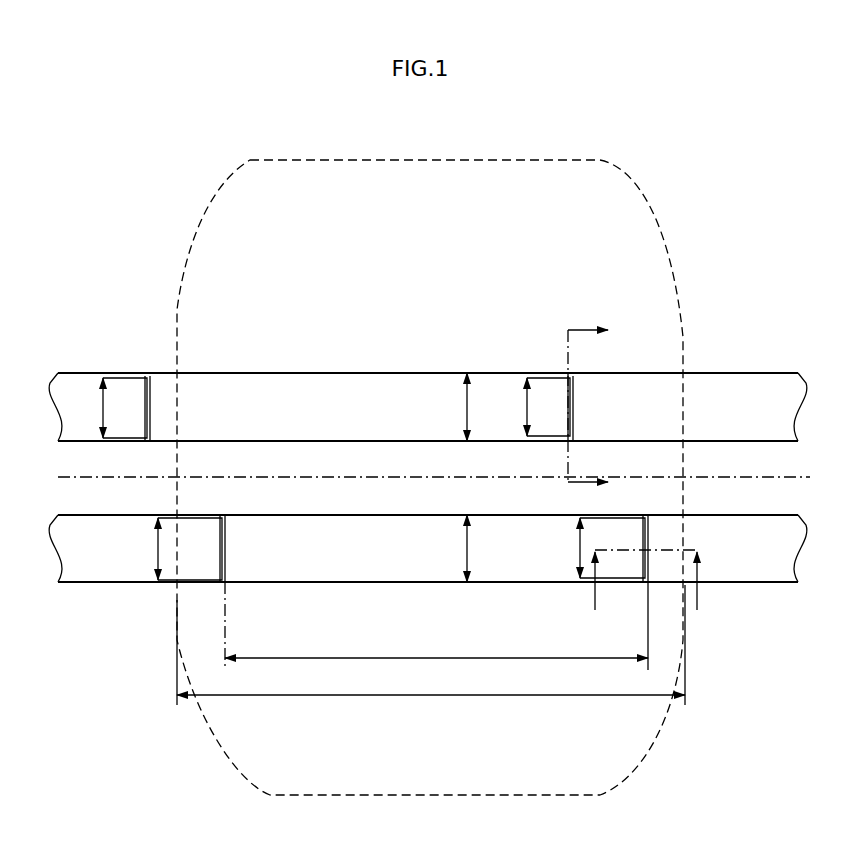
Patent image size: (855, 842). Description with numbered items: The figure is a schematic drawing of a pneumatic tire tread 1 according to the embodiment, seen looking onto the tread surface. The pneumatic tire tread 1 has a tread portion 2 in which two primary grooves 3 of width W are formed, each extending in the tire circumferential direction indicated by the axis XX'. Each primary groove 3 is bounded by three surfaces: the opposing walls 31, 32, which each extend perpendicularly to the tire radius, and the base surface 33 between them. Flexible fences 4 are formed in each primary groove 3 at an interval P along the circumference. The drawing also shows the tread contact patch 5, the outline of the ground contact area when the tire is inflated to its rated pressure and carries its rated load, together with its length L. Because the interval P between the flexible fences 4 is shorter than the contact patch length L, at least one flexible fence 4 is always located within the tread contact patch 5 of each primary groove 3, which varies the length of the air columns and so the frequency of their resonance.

The pneumatic tire tread 1 is at (437, 477).
The tread portion 2 is at (368, 598).
The primary groove 3 is at (437, 483).
The opposing wall 31 is at (409, 512).
The opposing wall 32 is at (414, 576).
The base surface 33 is at (260, 477).
The flexible fence 4 is at (144, 385).
The tread contact patch 5 is at (199, 238).